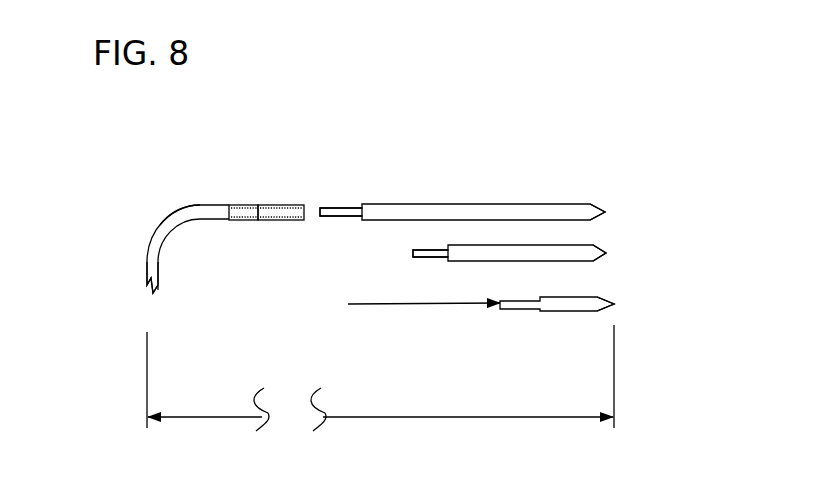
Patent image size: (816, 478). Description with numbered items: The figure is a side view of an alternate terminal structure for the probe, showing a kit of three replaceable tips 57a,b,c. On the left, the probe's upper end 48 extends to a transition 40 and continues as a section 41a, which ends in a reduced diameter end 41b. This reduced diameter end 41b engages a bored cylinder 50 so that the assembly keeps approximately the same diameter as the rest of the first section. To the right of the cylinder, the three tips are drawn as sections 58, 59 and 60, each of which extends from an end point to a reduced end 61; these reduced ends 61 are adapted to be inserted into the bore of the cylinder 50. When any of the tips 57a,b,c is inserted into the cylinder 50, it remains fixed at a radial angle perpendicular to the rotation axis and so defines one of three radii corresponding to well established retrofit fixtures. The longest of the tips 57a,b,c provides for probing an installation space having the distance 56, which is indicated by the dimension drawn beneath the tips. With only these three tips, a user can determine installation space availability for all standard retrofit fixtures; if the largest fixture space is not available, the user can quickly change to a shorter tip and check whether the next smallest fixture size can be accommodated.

The transition 40 is at (172, 232).
The section 41a is at (192, 207).
The reduced diameter end 41b is at (246, 207).
The upper end 48 is at (149, 268).
The bored cylinder 50 is at (279, 207).
The distance 56 is at (380, 378).
The replaceable tips 57a,b,c is at (623, 297).
The section 58 is at (577, 306).
The section 59 is at (519, 253).
The section 60 is at (436, 207).
The reduced ends 61 is at (414, 251).